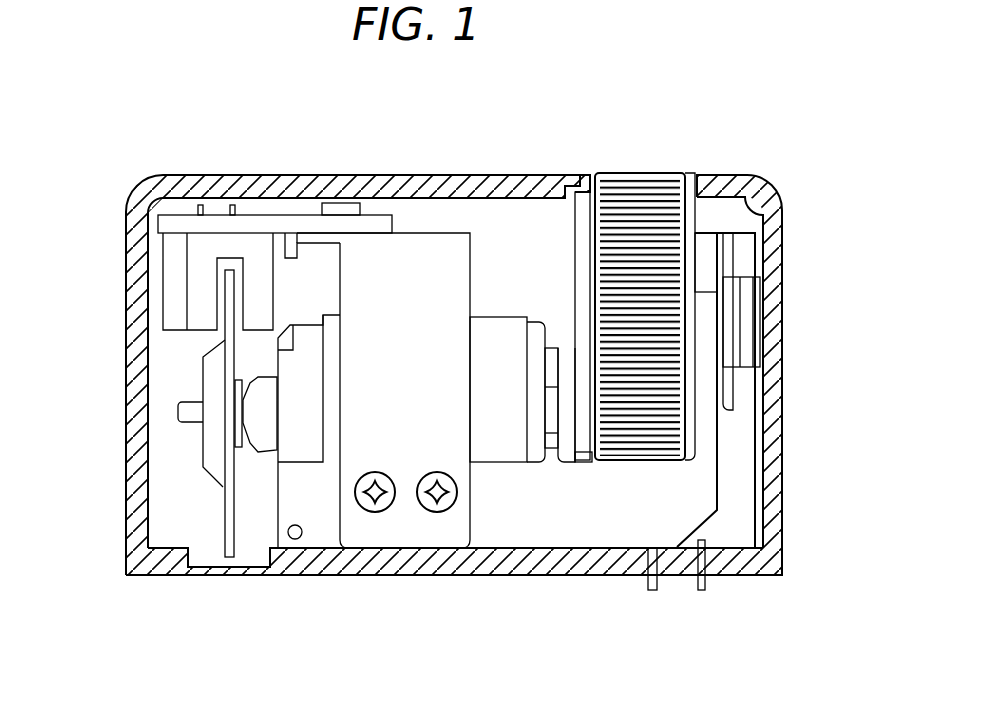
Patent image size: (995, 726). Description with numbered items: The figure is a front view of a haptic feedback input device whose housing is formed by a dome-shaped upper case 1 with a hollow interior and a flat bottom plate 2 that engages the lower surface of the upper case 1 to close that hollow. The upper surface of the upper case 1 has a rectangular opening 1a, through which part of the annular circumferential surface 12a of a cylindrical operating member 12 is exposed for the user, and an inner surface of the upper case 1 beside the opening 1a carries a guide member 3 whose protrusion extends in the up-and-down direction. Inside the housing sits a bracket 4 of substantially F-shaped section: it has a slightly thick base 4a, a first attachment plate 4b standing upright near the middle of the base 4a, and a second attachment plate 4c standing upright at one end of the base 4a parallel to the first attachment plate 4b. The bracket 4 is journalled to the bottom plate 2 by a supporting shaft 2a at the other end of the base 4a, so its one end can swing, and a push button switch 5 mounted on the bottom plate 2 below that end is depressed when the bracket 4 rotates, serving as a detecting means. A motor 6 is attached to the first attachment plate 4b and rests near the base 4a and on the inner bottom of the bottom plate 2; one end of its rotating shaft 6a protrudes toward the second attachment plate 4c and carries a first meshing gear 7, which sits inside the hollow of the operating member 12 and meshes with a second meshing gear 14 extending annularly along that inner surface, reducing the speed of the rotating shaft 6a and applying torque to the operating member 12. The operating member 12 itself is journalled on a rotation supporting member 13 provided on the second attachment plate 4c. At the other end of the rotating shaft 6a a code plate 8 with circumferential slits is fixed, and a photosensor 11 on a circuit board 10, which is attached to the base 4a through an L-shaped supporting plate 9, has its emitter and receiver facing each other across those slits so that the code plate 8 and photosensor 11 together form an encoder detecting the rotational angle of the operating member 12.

The upper case 1 is at (127, 522).
The opening 1a is at (692, 183).
The bottom plate 2 is at (182, 577).
The supporting shaft 2a is at (293, 539).
The guide member 3 is at (762, 313).
The bracket 4 is at (607, 548).
The base 4a is at (495, 518).
The first attachment plate 4b is at (553, 353).
The second attachment plate 4c is at (706, 430).
The push button switch 5 is at (683, 578).
The motor 6 is at (493, 315).
The rotating shaft 6a is at (185, 413).
The first meshing gear 7 is at (565, 415).
The code plate 8 is at (200, 357).
The supporting plate 9 is at (402, 518).
The circuit board 10 is at (298, 223).
The photosensor 11 is at (197, 265).
The operating member 12 is at (690, 215).
The circumferential surface 12a is at (636, 185).
The rotation supporting member 13 is at (740, 242).
The second meshing gear 14 is at (582, 208).